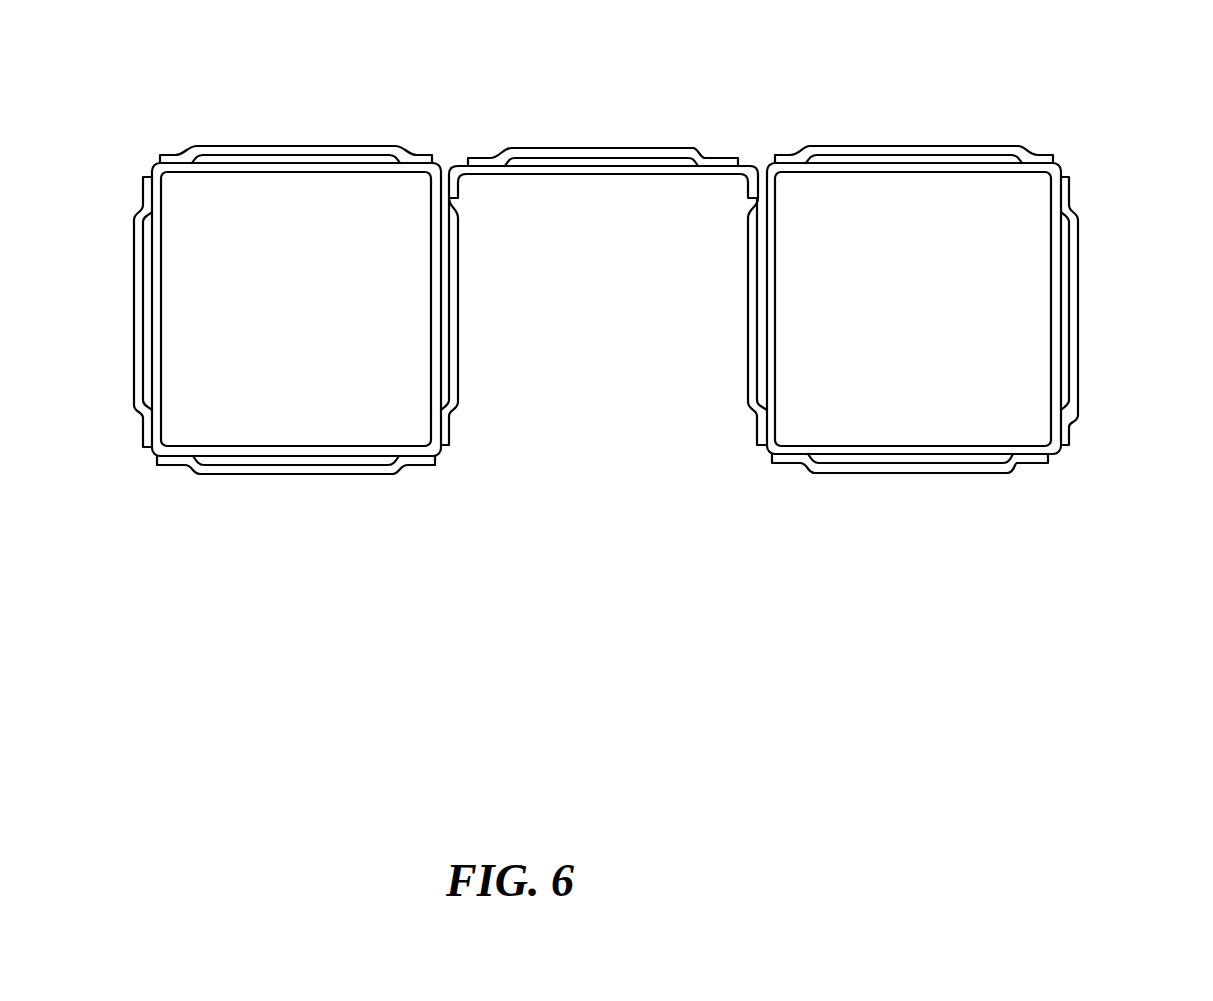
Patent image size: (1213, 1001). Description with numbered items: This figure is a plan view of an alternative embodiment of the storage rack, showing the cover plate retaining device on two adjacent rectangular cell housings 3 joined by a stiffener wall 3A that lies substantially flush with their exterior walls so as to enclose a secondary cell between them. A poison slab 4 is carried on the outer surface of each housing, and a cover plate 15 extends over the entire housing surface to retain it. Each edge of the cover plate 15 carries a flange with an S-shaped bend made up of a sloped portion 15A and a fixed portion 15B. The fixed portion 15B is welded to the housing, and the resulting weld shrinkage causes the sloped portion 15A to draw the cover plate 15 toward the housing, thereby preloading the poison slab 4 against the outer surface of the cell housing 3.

The cell housing 3 is at (780, 326).
The stiffener wall 3A is at (625, 175).
The poison slab 4 is at (333, 160).
The cover plate 15 is at (276, 150).
The sloped portion 15A is at (705, 157).
The fixed portion 15B is at (735, 162).